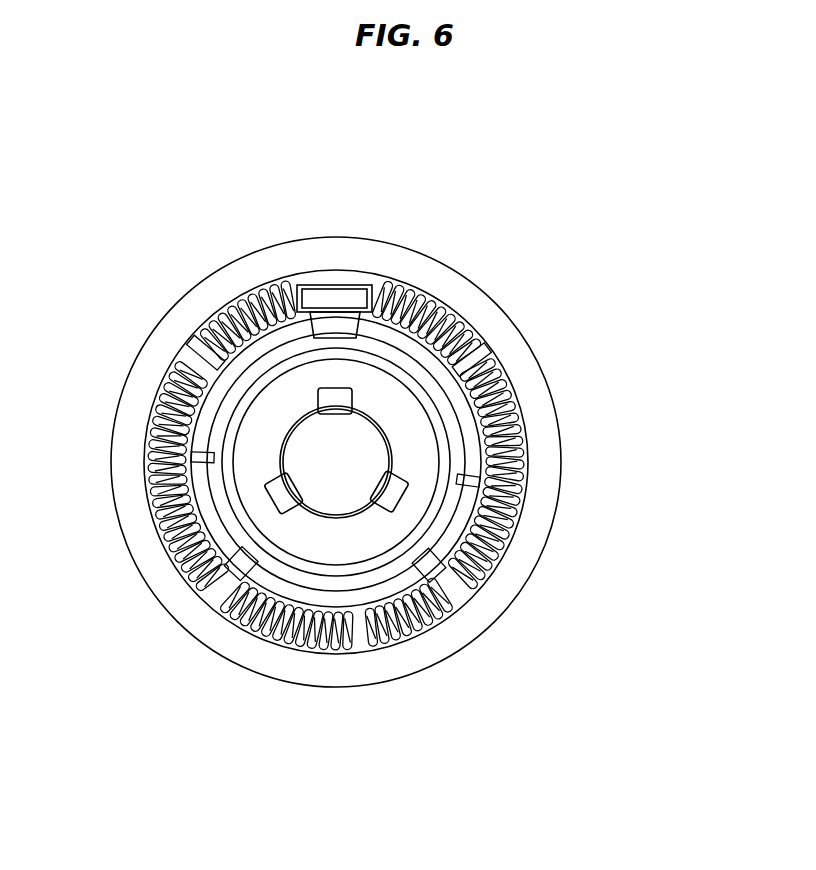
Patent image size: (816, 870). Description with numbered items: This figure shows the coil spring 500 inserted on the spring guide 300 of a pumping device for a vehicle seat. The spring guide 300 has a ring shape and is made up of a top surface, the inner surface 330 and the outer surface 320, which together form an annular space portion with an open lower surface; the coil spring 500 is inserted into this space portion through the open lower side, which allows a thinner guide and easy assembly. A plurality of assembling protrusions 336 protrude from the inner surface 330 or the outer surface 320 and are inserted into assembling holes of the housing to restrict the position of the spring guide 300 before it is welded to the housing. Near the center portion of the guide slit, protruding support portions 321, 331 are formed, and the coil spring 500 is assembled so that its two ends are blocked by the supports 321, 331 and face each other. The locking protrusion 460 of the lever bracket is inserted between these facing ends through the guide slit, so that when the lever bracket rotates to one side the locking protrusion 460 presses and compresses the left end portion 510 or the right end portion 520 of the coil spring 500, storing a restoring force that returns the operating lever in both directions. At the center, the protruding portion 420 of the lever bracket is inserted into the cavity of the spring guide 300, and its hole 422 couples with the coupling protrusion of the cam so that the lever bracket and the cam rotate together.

The spring guide 300 is at (183, 294).
The outer surface 320 is at (550, 477).
The protruding support portion 321 is at (318, 352).
The inner surface 330 is at (468, 436).
The protruding support portion 331 is at (477, 337).
The assembling protrusion 336 is at (475, 337).
The protruding portion 420 is at (325, 542).
The hole 422 is at (383, 492).
The locking protrusion 460 is at (331, 300).
The coil spring 500 is at (453, 314).
The left end portion 510 is at (372, 286).
The right end portion 520 is at (297, 286).